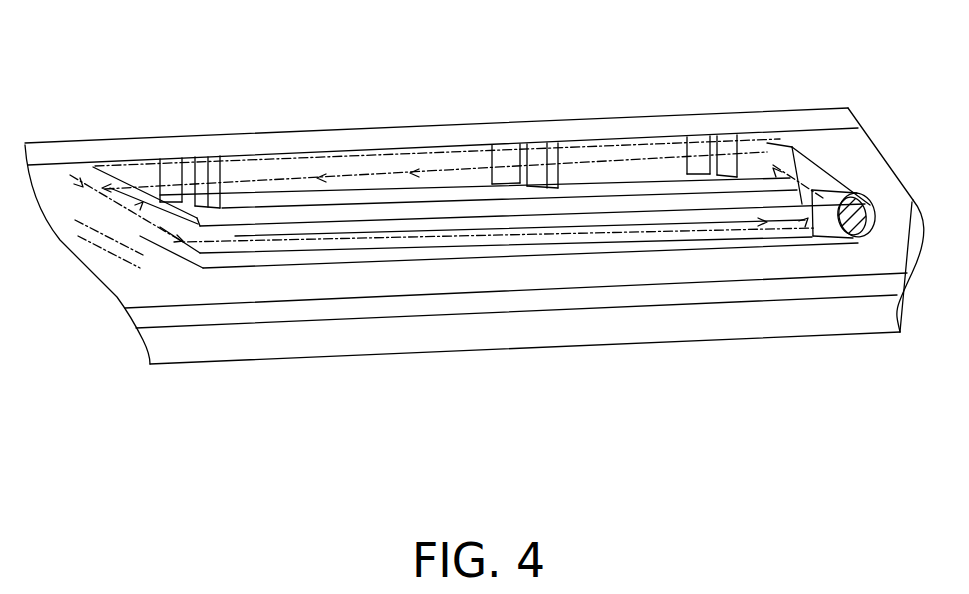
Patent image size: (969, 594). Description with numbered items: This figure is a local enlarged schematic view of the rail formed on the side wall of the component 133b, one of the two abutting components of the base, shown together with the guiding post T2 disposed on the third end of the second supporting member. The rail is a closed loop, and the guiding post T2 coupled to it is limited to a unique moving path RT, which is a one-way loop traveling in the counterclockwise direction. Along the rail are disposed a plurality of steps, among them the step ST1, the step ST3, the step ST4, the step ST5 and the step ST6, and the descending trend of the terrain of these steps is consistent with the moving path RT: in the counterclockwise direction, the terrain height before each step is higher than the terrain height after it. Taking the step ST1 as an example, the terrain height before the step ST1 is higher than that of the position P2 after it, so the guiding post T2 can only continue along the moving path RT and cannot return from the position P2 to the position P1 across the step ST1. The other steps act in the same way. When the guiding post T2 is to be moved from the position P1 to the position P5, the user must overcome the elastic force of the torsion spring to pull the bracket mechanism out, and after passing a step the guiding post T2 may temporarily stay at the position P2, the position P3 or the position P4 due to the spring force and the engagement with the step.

The component 133b is at (442, 340).
The moving path RT is at (370, 177).
The position P1 is at (817, 193).
The position P2 is at (702, 157).
The position P3 is at (508, 163).
The position P4 is at (168, 181).
The position P5 is at (83, 187).
The step ST1 is at (733, 153).
The step ST3 is at (540, 163).
The step ST4 is at (200, 181).
The step ST5 is at (143, 202).
The step ST6 is at (808, 218).
The guiding post T2 is at (870, 205).